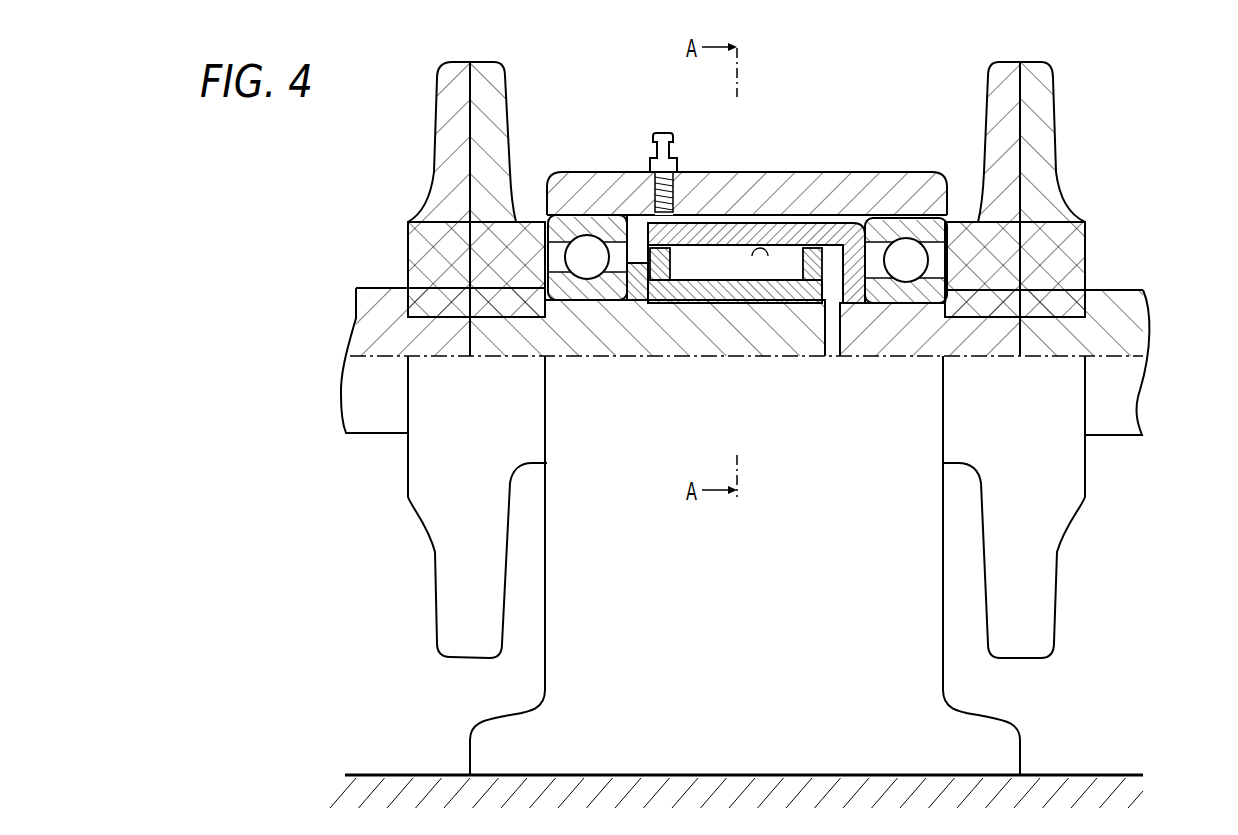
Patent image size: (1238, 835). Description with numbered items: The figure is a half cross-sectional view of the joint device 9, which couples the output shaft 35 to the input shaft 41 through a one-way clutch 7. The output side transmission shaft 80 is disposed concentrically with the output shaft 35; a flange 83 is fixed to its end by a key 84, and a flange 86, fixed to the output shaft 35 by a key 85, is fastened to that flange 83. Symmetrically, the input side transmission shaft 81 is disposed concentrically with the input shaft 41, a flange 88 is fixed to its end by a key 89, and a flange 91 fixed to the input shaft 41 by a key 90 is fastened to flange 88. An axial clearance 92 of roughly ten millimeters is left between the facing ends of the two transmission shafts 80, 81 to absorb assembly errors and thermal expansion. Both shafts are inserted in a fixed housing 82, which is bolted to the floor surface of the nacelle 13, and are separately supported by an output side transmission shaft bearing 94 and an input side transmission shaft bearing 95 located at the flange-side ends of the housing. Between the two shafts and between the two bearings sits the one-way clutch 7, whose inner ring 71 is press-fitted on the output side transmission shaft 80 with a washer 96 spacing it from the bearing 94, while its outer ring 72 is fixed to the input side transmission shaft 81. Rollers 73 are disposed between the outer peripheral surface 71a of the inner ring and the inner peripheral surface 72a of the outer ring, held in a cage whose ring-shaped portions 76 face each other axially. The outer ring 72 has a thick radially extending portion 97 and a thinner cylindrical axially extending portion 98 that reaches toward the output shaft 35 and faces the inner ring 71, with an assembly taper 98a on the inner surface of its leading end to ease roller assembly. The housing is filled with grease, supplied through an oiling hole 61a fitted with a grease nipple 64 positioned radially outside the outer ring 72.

The one-way clutch 7 is at (822, 172).
The joint device 9 is at (852, 168).
The nacelle 13 is at (1100, 775).
The output shaft 35 is at (356, 318).
The input shaft 41 is at (1136, 326).
The oiling hole 61a is at (668, 190).
The grease nipple 64 is at (660, 133).
The inner ring 71 is at (697, 312).
The outer peripheral surface 71a is at (765, 283).
The outer ring 72 is at (755, 208).
The inner peripheral surface 72a is at (795, 208).
The rollers 73 is at (735, 275).
The ring-shaped portions 76 is at (660, 290).
The output side transmission shaft 80 is at (590, 362).
The input side transmission shaft 81 is at (900, 362).
The fixed housing 82 is at (882, 197).
The flange 83 is at (495, 100).
The key 84 is at (524, 262).
The key 85 is at (430, 292).
The flange 86 is at (448, 100).
The flange 88 is at (993, 100).
The key 89 is at (968, 262).
The key 90 is at (1065, 295).
The flange 91 is at (1050, 100).
The clearance 92 is at (832, 352).
The output side transmission shaft bearing 94 is at (577, 235).
The input side transmission shaft bearing 95 is at (920, 215).
The washer 96 is at (637, 302).
The radially extending portion 97 is at (848, 303).
The axially extending portion 98 is at (718, 225).
The assembly taper 98a is at (638, 255).